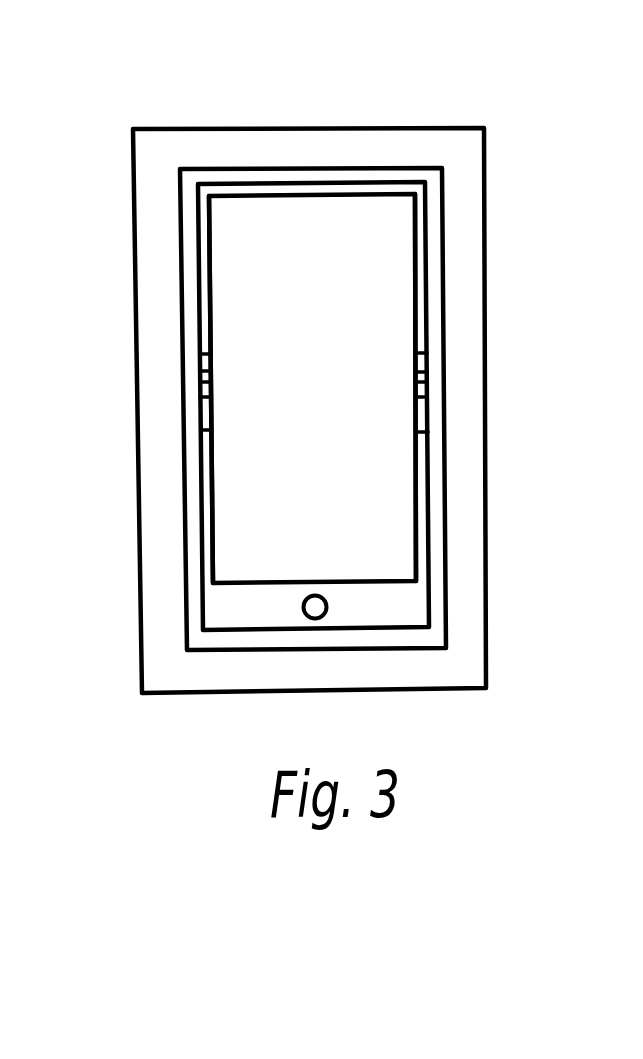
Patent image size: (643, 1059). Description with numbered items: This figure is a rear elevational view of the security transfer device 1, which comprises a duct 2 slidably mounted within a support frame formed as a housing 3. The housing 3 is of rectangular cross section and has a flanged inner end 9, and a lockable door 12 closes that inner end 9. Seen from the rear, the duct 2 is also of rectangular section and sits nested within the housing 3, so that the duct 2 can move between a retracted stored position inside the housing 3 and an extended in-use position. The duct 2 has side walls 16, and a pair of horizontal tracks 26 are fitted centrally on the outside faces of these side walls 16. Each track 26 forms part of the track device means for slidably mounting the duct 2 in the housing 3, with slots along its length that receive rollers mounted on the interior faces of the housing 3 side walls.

The security transfer device 1 is at (513, 113).
The duct 2 is at (424, 218).
The housing 3 is at (485, 238).
The flanged inner end 9 is at (475, 604).
The lockable door 12 is at (242, 547).
The side walls 16 is at (212, 478).
The horizontal tracks 26 is at (207, 392).